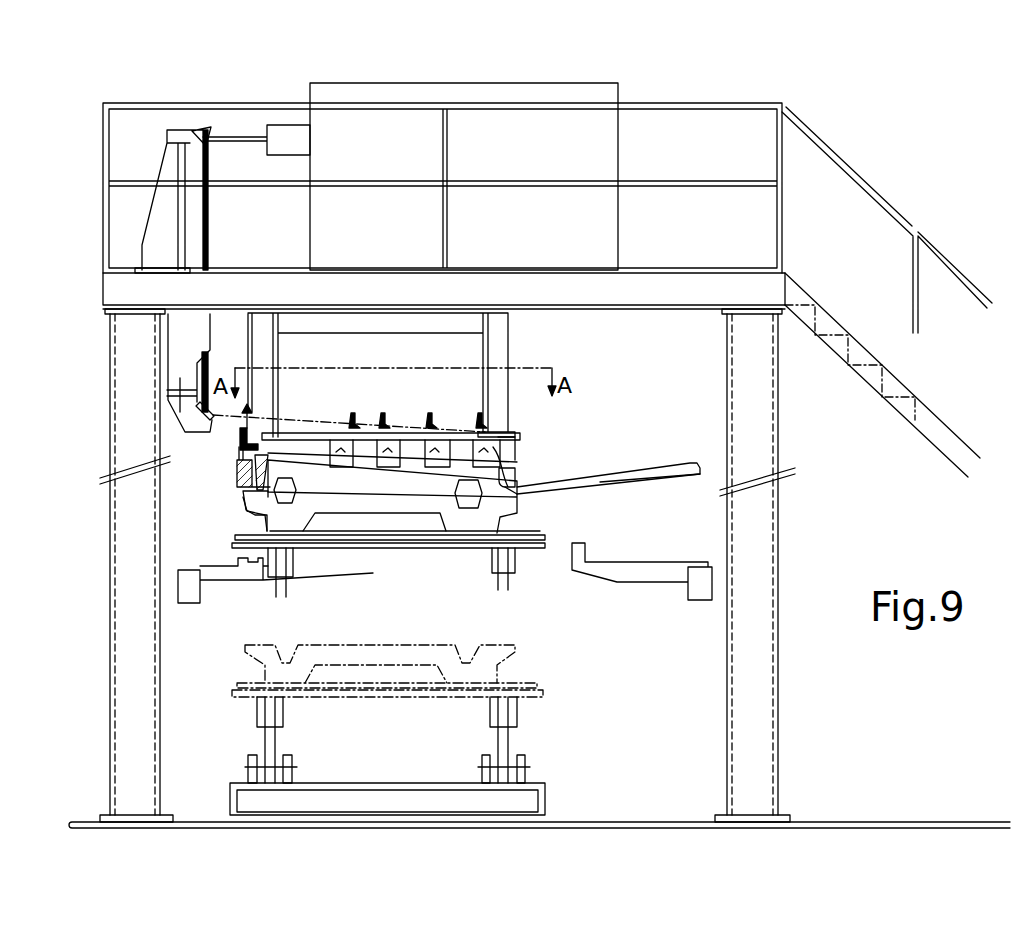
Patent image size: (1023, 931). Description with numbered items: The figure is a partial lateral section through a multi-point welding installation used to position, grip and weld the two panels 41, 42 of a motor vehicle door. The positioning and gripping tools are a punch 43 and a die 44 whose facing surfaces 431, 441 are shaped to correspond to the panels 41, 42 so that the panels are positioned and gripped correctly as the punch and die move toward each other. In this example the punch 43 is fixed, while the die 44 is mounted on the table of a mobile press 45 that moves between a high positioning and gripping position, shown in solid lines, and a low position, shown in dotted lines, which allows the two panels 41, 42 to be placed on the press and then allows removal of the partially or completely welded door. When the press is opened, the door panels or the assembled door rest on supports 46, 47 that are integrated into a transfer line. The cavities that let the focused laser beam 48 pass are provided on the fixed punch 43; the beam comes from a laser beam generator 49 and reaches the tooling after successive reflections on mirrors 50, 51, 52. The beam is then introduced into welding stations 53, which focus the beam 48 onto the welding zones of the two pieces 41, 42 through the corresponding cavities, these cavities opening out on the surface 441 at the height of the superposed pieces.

The panel 41 is at (636, 470).
The panel 42 is at (667, 478).
The punch 43 is at (514, 468).
The facing surface of the punch 431 is at (518, 488).
The die 44 is at (493, 508).
The facing surface of the die 441 is at (362, 498).
The mobile press 45 is at (538, 545).
The support 46 is at (658, 575).
The support 47 is at (222, 572).
The focused laser beam 48 is at (237, 458).
The laser beam generator 49 is at (405, 155).
The mirror 50 is at (205, 130).
The mirror 51 is at (196, 414).
The mirror 52 is at (386, 424).
The welding station 53 is at (449, 428).